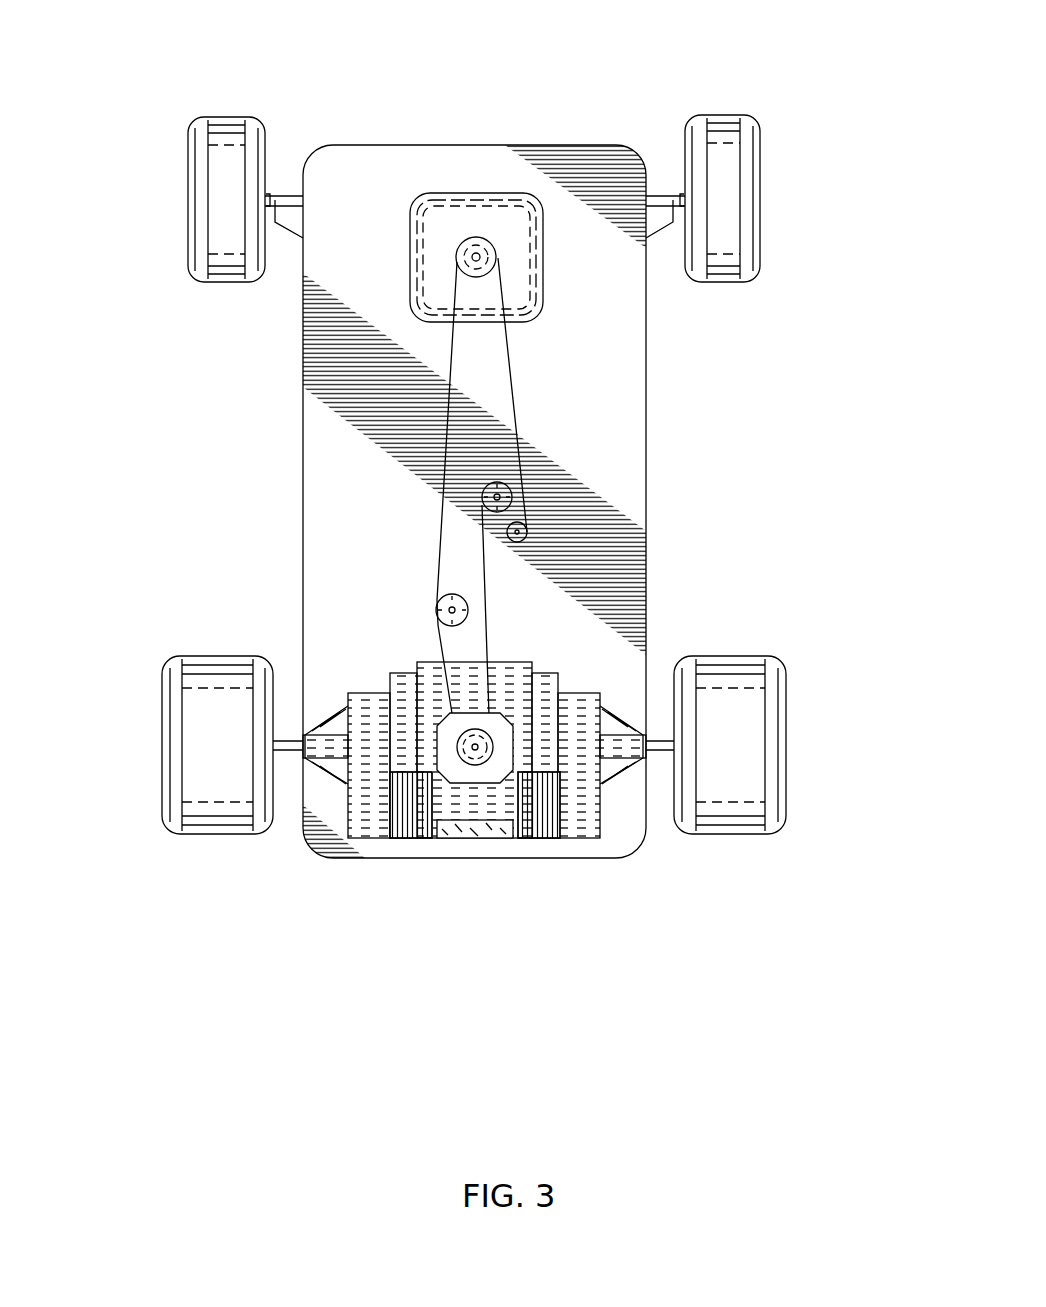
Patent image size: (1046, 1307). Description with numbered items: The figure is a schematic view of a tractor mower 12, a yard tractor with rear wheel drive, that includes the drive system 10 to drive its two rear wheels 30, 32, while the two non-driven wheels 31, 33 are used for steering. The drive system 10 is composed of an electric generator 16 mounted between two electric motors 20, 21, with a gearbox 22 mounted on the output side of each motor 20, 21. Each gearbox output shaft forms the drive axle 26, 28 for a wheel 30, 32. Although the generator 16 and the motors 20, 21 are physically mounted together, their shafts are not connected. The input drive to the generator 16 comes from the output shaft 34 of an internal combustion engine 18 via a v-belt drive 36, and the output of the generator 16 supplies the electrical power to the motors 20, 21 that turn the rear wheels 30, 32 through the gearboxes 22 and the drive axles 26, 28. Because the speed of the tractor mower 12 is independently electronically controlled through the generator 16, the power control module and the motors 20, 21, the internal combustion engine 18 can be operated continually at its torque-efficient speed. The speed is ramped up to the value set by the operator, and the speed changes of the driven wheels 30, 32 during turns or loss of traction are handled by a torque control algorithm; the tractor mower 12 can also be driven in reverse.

The drive system 10 is at (570, 220).
The tractor mower 12 is at (450, 432).
The electric generator 16 is at (411, 862).
The internal combustion engine 18 is at (476, 166).
The electric motor 20 is at (329, 832).
The electric motor 21 is at (688, 807).
The gearbox 22 is at (504, 650).
The drive axle 26 is at (250, 625).
The drive axle 28 is at (714, 638).
The rear wheel 30 is at (177, 694).
The non-driven wheel 31 is at (164, 161).
The rear wheel 32 is at (774, 700).
The non-driven wheel 33 is at (795, 157).
The output shaft 34 is at (535, 140).
The v-belt drive 36 is at (654, 501).